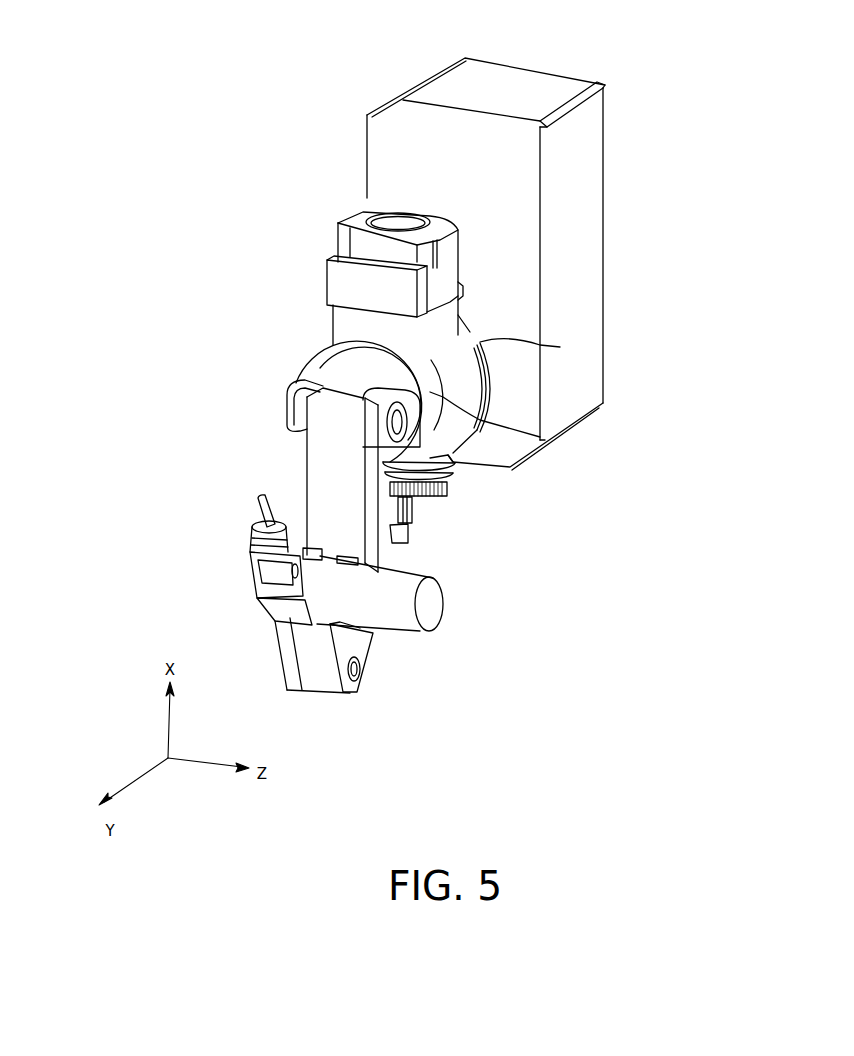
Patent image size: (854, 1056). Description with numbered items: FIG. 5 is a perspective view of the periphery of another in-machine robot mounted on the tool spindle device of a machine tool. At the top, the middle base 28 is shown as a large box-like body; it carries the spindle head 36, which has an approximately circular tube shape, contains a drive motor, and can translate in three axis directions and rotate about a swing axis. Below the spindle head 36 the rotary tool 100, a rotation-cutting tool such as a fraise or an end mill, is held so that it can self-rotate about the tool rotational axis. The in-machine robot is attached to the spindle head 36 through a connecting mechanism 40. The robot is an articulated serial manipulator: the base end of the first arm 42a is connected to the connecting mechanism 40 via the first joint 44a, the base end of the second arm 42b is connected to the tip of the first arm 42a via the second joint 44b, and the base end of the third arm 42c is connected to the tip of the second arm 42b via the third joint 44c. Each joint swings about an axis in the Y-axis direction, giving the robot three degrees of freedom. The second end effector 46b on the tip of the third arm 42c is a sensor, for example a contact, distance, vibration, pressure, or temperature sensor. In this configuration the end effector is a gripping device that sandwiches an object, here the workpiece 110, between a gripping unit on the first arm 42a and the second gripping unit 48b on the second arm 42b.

The middle base 28 is at (523, 92).
The spindle head 36 is at (443, 353).
The connecting mechanism 40 is at (546, 442).
The first joint 44a is at (297, 425).
The first arm 42a is at (307, 480).
The second end effector 46b is at (253, 502).
The third arm 42c is at (253, 542).
The third joint 44c is at (260, 565).
The second arm 42b is at (283, 643).
The second joint 44b is at (367, 683).
The second gripping unit 48b is at (343, 633).
The rotary tool 100 is at (410, 531).
The workpiece 110 is at (431, 601).